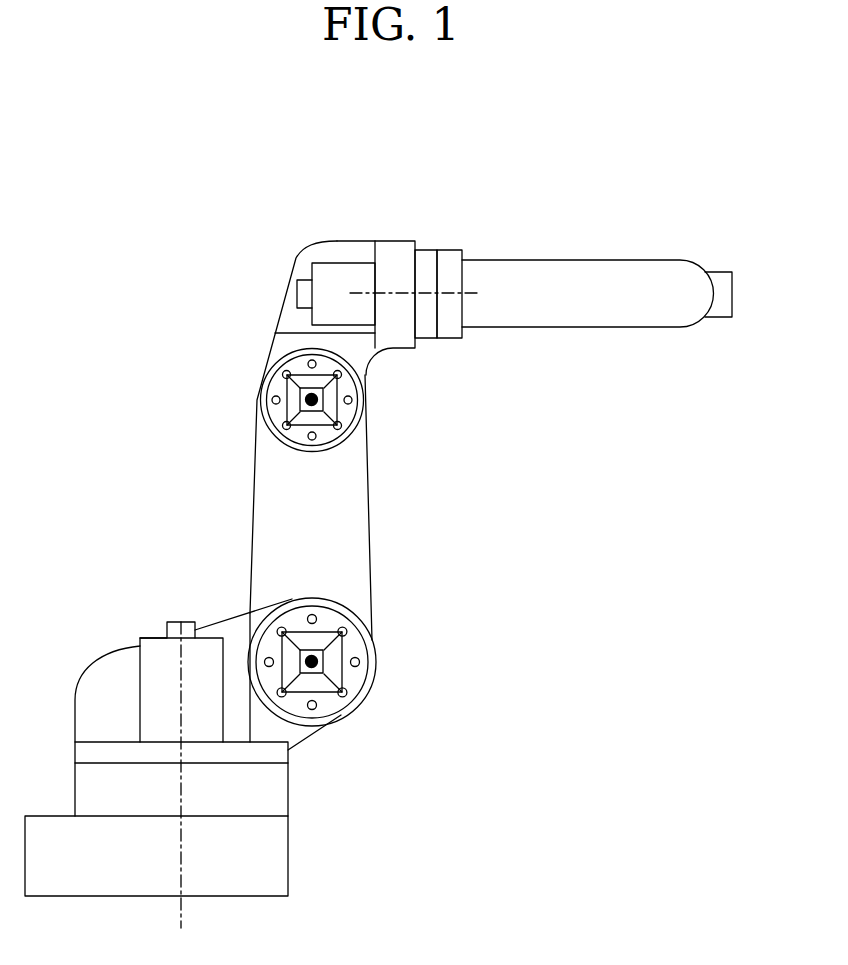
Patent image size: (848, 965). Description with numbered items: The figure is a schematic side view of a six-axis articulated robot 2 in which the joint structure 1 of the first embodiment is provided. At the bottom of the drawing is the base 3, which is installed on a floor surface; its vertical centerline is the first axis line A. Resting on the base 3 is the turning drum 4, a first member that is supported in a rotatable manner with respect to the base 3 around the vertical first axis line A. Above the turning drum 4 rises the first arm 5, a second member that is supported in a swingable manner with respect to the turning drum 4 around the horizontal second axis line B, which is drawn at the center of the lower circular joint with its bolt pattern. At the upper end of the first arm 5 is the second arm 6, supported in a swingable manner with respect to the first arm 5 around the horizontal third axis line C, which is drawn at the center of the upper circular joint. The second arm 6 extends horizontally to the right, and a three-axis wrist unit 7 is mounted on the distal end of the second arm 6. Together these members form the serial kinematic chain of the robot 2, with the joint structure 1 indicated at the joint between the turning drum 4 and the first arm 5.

The joint structure 1 is at (362, 704).
The robot 2 is at (166, 278).
The base 3 is at (288, 860).
The turning drum 4 is at (310, 737).
The first arm 5 is at (369, 490).
The second arm 6 is at (398, 348).
The wrist unit 7 is at (690, 325).
The first axis line A is at (181, 910).
The second axis line B is at (314, 664).
The third axis line C is at (300, 392).